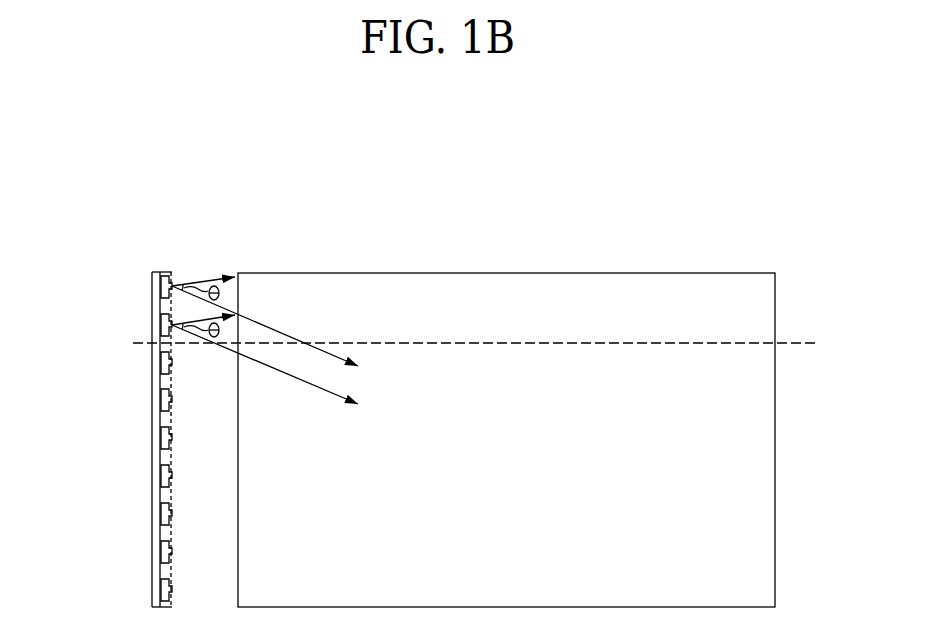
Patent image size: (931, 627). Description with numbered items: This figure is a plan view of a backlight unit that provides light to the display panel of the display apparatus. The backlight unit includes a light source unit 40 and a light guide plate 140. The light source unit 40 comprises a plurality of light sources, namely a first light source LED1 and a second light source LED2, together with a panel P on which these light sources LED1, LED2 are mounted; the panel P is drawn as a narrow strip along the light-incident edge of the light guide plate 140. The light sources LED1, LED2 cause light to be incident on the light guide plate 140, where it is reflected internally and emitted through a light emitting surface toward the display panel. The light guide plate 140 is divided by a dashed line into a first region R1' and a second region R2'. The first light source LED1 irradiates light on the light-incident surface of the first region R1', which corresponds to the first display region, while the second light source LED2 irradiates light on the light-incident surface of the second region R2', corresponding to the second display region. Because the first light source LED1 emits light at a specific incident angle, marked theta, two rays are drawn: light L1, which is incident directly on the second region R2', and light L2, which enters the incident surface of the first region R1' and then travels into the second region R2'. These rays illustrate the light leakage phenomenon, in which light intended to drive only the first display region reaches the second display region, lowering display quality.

The light source unit 40 is at (106, 439).
The panel P is at (162, 400).
The first light source LED1 is at (162, 316).
The second light source LED2 is at (78, 303).
The light L1 is at (263, 363).
The light L2 is at (263, 325).
The first region R1' is at (539, 308).
The second region R2' is at (539, 475).
The light guide plate 140 is at (775, 548).